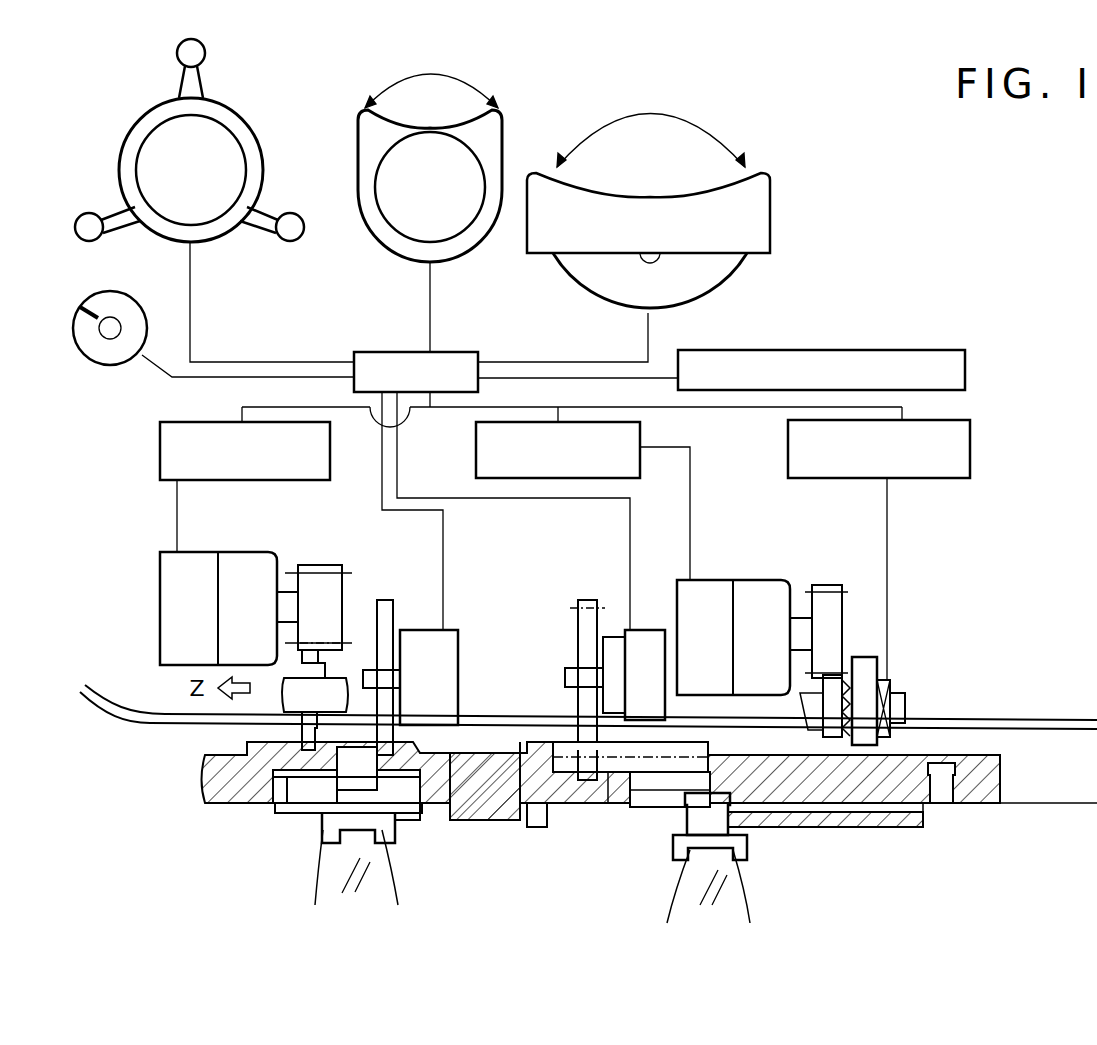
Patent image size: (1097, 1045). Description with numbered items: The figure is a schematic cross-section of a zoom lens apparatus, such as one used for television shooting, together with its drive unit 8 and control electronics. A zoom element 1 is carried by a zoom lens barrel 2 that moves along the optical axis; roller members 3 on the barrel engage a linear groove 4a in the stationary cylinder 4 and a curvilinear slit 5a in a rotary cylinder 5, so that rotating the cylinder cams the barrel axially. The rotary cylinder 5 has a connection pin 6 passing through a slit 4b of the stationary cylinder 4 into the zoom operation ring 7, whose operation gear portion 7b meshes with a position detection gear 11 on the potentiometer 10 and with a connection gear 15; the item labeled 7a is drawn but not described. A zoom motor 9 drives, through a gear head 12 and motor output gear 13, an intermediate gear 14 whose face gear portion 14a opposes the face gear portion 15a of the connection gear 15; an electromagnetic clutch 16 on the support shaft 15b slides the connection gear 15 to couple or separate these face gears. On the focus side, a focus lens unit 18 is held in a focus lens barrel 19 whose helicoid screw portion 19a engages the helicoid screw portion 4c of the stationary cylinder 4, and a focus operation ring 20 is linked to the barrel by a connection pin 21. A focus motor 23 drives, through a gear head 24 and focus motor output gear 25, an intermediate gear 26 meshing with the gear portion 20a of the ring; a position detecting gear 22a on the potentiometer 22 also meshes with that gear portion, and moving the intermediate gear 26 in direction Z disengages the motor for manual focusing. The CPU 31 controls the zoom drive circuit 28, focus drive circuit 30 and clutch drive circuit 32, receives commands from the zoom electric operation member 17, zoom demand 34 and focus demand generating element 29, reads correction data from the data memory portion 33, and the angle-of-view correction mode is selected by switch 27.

The zoom element 1 is at (677, 898).
The zoom lens barrel 2 is at (673, 852).
The roller member 3 is at (653, 805).
The stationary cylinder 4 is at (488, 745).
The linear groove 4a is at (650, 800).
The slit 4b is at (528, 815).
The helicoid screw portion 4c is at (405, 813).
The rotary cylinder 5 is at (790, 818).
The curvilinear slit 5a is at (727, 820).
The connection pin 6 is at (603, 800).
The zoom operation ring 7 is at (558, 750).
The zoom shaft upper portion 7a is at (578, 748).
The operation gear portion 7b is at (928, 807).
The drive unit 8 is at (1064, 729).
The zoom motor 9 is at (710, 580).
The potentiometer 10 is at (650, 630).
The position detection gear 11 is at (585, 600).
The gear head 12 is at (760, 580).
The motor output gear 13 is at (828, 592).
The intermediate gear 14 is at (827, 813).
The face gear portion 14a is at (893, 817).
The connection gear 15 is at (864, 668).
The face gear portion 15a is at (840, 690).
The support shaft 15b is at (908, 700).
The electromagnetic clutch 16 is at (890, 680).
The zoom electric operation member 17 is at (770, 205).
The focus lens unit 18 is at (332, 877).
The focus lens barrel 19 is at (328, 827).
The helicoid screw portion 19a is at (285, 813).
The focus operation ring 20 is at (250, 763).
The gear portion 20a is at (263, 742).
The connection pin 21 is at (285, 792).
The potentiometer 22 is at (430, 630).
The position detecting gear 22a is at (388, 600).
The focus motor 23 is at (168, 552).
The gear head 24 is at (248, 555).
The focus motor output gear 25 is at (316, 585).
The intermediate gear 26 is at (300, 775).
The angle-of-view correction mode selecting switch 27 is at (114, 367).
The zoom drive circuit 28 is at (476, 460).
The focus demand generating element 29 is at (223, 130).
The focus drive circuit 30 is at (160, 443).
The CPU 31 is at (470, 352).
The clutch drive circuit 32 is at (918, 480).
The data memory portion 33 is at (858, 350).
The zoom demand 34 is at (367, 145).